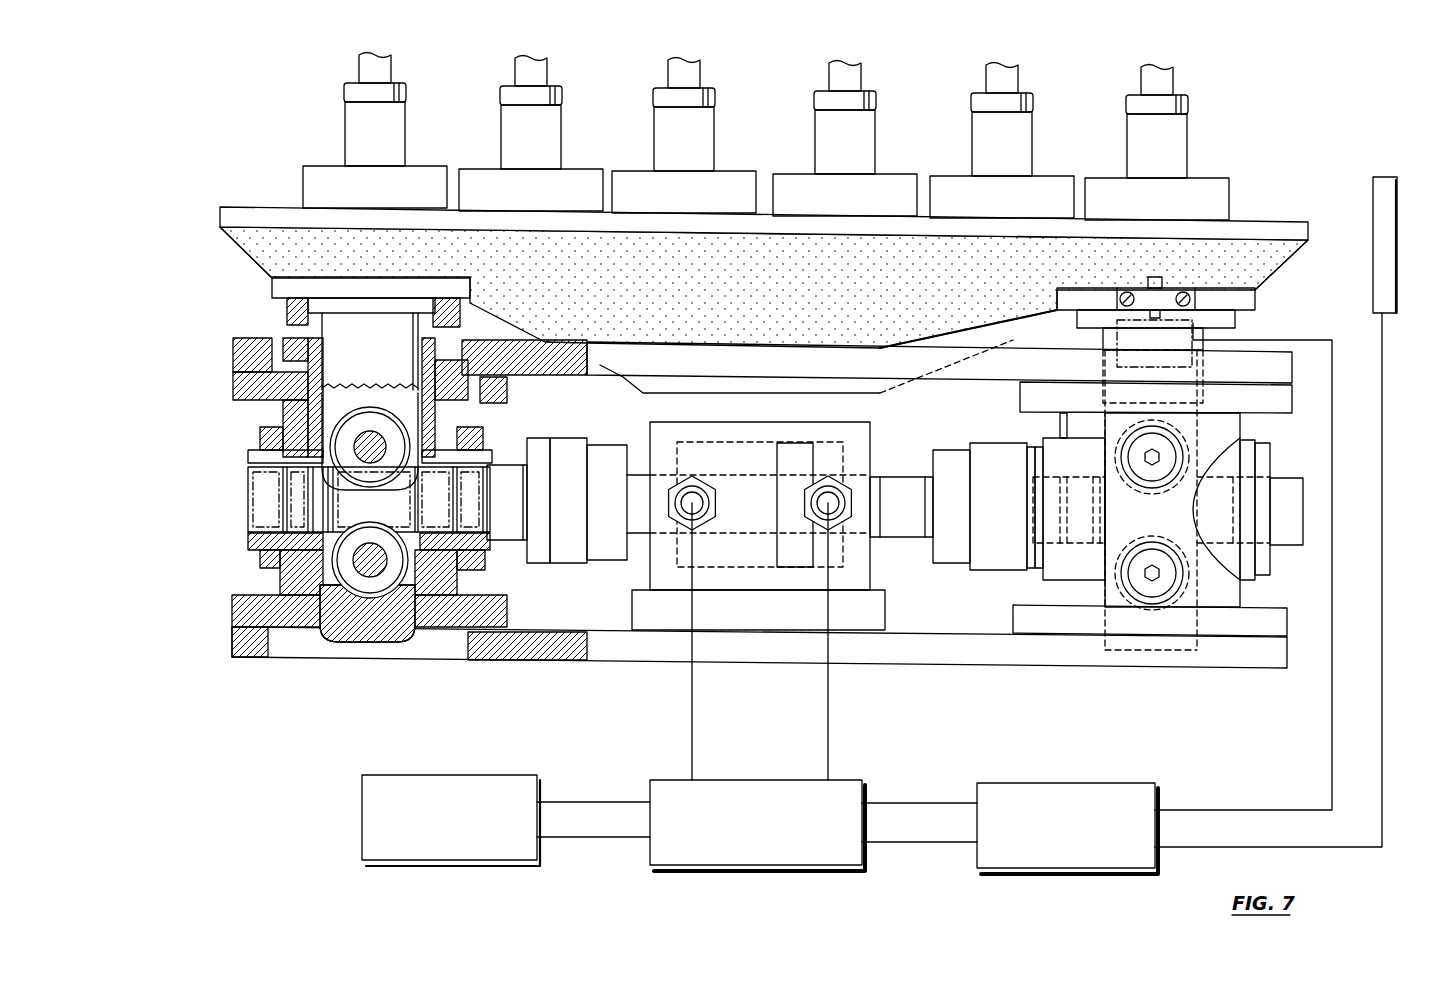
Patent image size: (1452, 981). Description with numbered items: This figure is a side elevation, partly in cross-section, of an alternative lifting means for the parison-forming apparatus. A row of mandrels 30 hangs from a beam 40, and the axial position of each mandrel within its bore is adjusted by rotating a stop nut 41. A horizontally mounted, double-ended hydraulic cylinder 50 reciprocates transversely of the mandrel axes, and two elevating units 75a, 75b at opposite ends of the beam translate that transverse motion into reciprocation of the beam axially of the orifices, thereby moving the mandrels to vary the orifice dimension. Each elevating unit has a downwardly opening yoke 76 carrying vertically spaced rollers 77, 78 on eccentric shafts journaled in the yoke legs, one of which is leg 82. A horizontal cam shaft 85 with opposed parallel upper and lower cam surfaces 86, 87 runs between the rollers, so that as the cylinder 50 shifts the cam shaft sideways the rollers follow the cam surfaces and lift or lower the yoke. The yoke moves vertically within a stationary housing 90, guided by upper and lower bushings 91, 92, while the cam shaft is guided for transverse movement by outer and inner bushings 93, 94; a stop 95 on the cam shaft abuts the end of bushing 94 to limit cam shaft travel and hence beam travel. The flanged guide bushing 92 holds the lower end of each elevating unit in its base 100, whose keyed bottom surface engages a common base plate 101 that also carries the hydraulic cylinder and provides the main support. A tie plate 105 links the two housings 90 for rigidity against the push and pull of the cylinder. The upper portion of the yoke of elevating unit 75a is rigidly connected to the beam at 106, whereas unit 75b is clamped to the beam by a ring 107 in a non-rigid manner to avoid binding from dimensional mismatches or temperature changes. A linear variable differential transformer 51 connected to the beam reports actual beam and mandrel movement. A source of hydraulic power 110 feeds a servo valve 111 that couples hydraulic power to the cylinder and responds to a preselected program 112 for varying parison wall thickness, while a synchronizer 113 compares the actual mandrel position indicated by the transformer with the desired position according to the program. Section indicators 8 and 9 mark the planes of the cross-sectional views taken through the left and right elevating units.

The mandrel 30 is at (515, 74).
The stop nut 41 is at (500, 101).
The beam 40 is at (1310, 231).
The linear variable differential transformer 51 is at (1155, 275).
The rigid connection 106 is at (1262, 306).
The synchronizer 113 is at (1390, 268).
The tie plate 105 is at (958, 376).
The base 100 is at (240, 613).
The base plate 101 is at (235, 645).
The ring 107 is at (287, 302).
The yoke 76 is at (381, 344).
The upper roller 77 is at (368, 412).
The lower roller 78 is at (370, 588).
The stationary housing 90 is at (243, 387).
The upper bushing 91 is at (298, 345).
The outer bushing 93 is at (258, 442).
The elevating unit 75b is at (222, 472).
The elevating unit 75a is at (1254, 425).
The cam shaft 85 is at (335, 493).
The upper cam surface 86 is at (404, 472).
The lower cam surface 87 is at (393, 522).
The lower bushing 92 is at (292, 622).
The inner bushing 94 is at (475, 547).
The stop 95 is at (527, 447).
The hydraulic cylinder 50 is at (860, 442).
The yoke leg 82 is at (1190, 647).
The source of hydraulic power 110 is at (379, 847).
The servo valve 111 is at (667, 847).
The preselected program 112 is at (992, 847).
The section line 8 is at (270, 582).
The section line 9 is at (1158, 265).